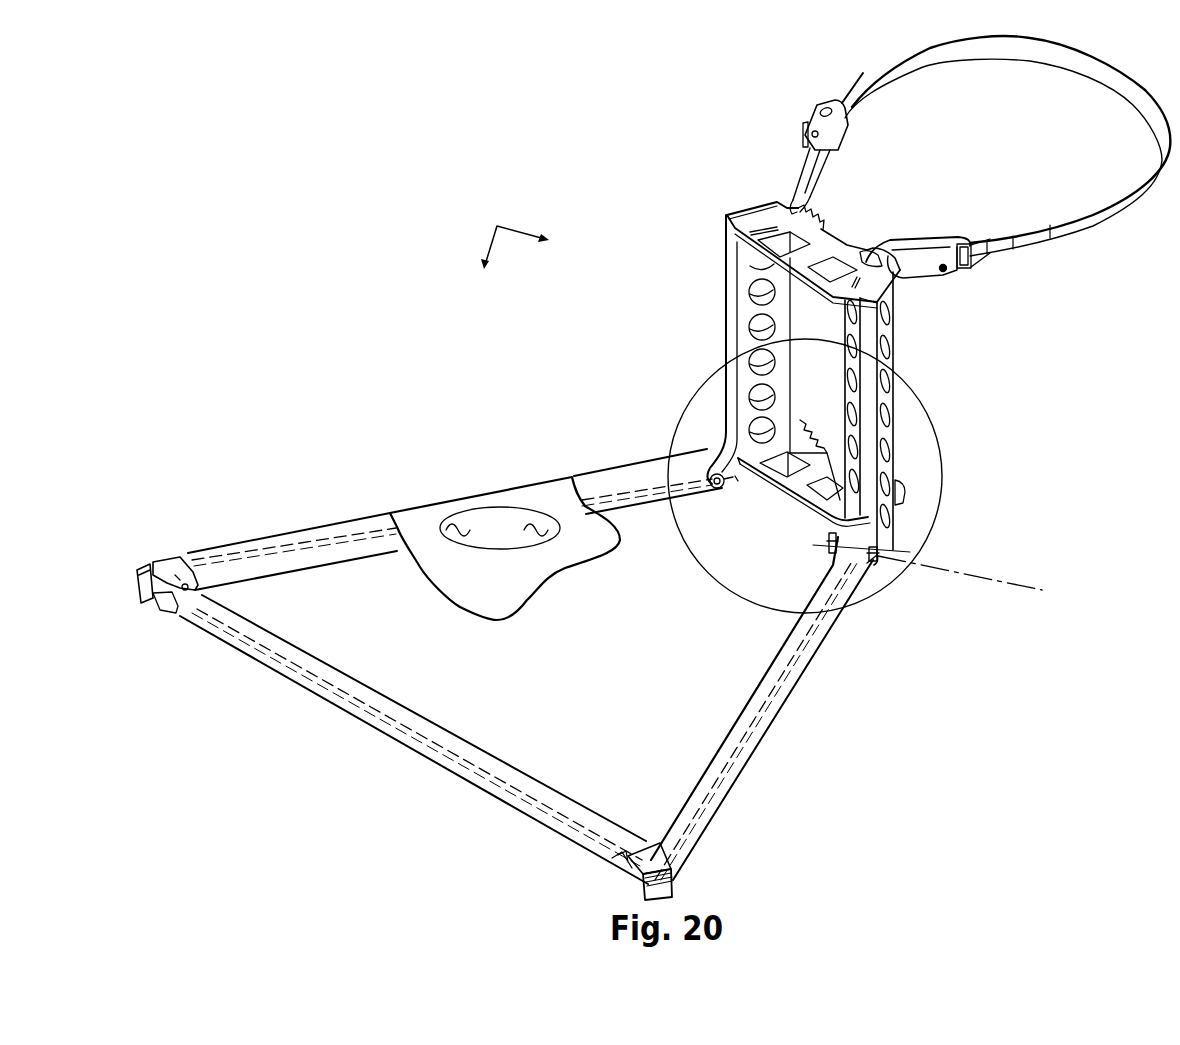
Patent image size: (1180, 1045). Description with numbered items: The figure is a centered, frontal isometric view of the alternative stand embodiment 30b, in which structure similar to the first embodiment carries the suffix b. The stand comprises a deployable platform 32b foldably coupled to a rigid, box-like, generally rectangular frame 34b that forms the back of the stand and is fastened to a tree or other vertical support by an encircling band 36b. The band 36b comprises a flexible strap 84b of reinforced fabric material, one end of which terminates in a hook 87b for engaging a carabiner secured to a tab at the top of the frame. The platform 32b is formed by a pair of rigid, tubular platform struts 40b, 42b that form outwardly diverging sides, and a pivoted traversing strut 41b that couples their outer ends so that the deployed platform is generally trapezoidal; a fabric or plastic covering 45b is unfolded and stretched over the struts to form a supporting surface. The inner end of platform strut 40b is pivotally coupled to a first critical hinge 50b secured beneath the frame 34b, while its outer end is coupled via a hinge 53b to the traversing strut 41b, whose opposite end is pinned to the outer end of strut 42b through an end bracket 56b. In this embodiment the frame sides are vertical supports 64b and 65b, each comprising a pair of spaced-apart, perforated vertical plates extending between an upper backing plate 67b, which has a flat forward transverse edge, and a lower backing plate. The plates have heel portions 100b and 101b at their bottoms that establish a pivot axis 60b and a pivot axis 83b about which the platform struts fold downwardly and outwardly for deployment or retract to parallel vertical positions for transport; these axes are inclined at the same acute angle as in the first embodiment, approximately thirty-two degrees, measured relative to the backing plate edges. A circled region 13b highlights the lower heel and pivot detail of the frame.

The detail circle 13b is at (942, 454).
The alternative stand embodiment 30b is at (510, 229).
The deployable platform 32b is at (348, 514).
The frame 34b is at (906, 298).
The encircling band 36b is at (1128, 102).
The platform strut 40b is at (306, 542).
The traversing strut 41b is at (468, 750).
The platform strut 42b is at (757, 733).
The covering 45b is at (505, 548).
The first critical hinge 50b is at (710, 484).
The hinge 53b is at (210, 583).
The end bracket 56b is at (613, 870).
The pivot axis 60b is at (876, 547).
The vertical support 64b is at (718, 308).
The vertical support 65b is at (906, 338).
The upper backing plate 67b is at (821, 231).
The pivot axis 83b is at (1027, 585).
The strap 84b is at (928, 50).
The hook 87b is at (958, 232).
The heel portion 100b is at (690, 437).
The heel portion 101b is at (870, 522).